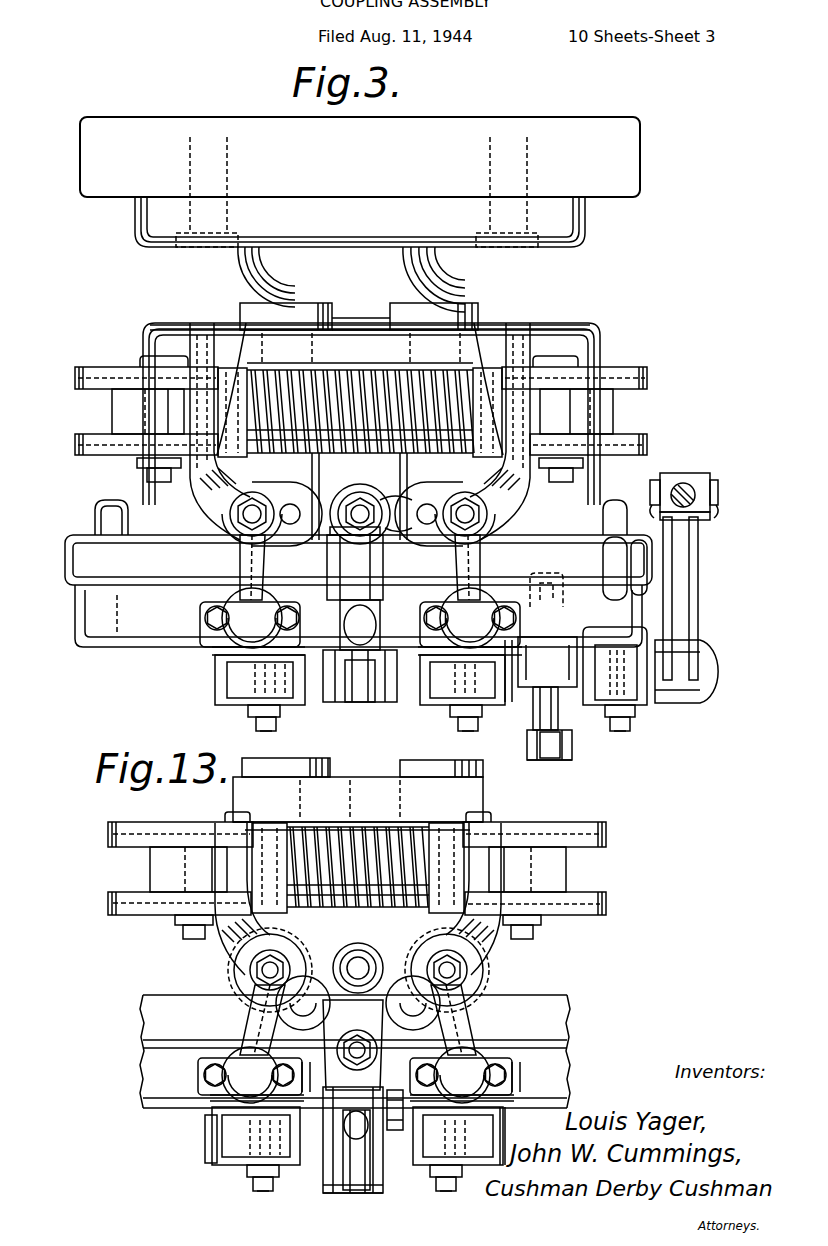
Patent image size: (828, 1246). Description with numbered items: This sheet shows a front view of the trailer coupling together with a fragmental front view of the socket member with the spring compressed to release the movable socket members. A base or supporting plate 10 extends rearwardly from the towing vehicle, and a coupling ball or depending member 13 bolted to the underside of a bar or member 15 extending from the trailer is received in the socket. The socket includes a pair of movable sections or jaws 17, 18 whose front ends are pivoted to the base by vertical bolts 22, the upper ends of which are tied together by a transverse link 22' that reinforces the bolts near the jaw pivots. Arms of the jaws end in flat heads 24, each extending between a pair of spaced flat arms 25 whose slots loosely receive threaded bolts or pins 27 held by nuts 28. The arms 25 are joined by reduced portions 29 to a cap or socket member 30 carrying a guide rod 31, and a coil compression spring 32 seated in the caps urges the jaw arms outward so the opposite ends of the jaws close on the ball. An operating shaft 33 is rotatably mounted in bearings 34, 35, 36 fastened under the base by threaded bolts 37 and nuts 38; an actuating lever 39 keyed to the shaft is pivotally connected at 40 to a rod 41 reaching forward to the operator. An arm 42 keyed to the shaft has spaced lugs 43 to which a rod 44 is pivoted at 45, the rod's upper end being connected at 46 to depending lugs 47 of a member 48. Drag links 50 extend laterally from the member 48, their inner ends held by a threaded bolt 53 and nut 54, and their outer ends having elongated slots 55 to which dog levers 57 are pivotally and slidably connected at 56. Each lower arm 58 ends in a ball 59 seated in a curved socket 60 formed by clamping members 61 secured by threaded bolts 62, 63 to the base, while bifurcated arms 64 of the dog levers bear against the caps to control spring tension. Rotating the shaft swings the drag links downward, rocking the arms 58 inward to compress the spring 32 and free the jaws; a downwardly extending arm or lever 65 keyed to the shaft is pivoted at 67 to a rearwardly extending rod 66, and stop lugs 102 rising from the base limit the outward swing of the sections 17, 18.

In FIG. 3, the base or supporting plate 10 is at (80, 572).
In FIG. 13, the base or supporting plate 10 is at (550, 1008).
In FIG. 3, the coupling ball or depending member 13 is at (415, 292).
In FIG. 3, the bar or member 15 is at (610, 186).
In FIG. 3, the movable section or jaw 17 is at (160, 322).
In FIG. 3, the movable section or jaw 18 is at (556, 322).
In FIG. 3, the vertical bolts 22 is at (359, 302).
In FIG. 13, the vertical bolts 22 is at (358, 786).
In FIG. 3, the transverse link 22' is at (361, 298).
In FIG. 13, the transverse link 22' is at (286, 762).
In FIG. 3, the heads 24 is at (112, 426).
In FIG. 13, the heads 24 is at (160, 877).
In FIG. 3, the spaced flat arms 25 is at (82, 370).
In FIG. 13, the spaced flat arms 25 is at (115, 824).
In FIG. 3, the threaded bolts or pins 27 is at (150, 360).
In FIG. 13, the threaded bolts or pins 27 is at (226, 815).
In FIG. 3, the nuts 28 is at (140, 465).
In FIG. 13, the nuts 28 is at (178, 925).
In FIG. 3, the reduced portions 29 is at (205, 345).
In FIG. 13, the reduced portions 29 is at (235, 860).
In FIG. 3, the cap or socket member 30 is at (238, 365).
In FIG. 13, the cap or socket member 30 is at (262, 820).
In FIG. 3, the guide rod 31 is at (262, 392).
In FIG. 13, the guide rod 31 is at (340, 830).
In FIG. 3, the coil compression spring 32 is at (372, 368).
In FIG. 13, the coil compression spring 32 is at (368, 828).
In FIG. 3, the operating shaft 33 is at (722, 668).
In FIG. 13, the operating shaft 33 is at (215, 1130).
In FIG. 3, the bearing 34 is at (645, 704).
In FIG. 3, the bearing 35 is at (487, 700).
In FIG. 13, the bearing 35 is at (512, 1112).
In FIG. 3, the bearing 36 is at (230, 692).
In FIG. 13, the bearing 36 is at (232, 1162).
In FIG. 3, the threaded bolts 37 is at (262, 726).
In FIG. 13, the threaded bolts 37 is at (262, 1190).
In FIG. 3, the nuts 38 is at (252, 708).
In FIG. 13, the nuts 38 is at (252, 1175).
In FIG. 3, the actuating lever 39 is at (690, 578).
In FIG. 3, the pivotal connection 40 is at (712, 490).
In FIG. 3, the rod 41 is at (688, 490).
In FIG. 3, the arm 42 is at (345, 702).
In FIG. 3, the spaced lugs 43 is at (332, 702).
In FIG. 13, the spaced lugs 43 is at (335, 1193).
In FIG. 3, the rod 44 is at (370, 702).
In FIG. 13, the rod 44 is at (358, 1193).
In FIG. 3, the pivotal connection 45 is at (318, 692).
In FIG. 13, the pivotal connection 45 is at (325, 1185).
In FIG. 3, the pivotal connection 46 is at (327, 570).
In FIG. 13, the pivotal connection 46 is at (322, 1120).
In FIG. 3, the spaced depending lugs 47 is at (335, 540).
In FIG. 13, the spaced depending lugs 47 is at (375, 1064).
In FIG. 3, the member 48 is at (392, 500).
In FIG. 13, the member 48 is at (395, 1090).
In FIG. 3, the drag links 50 is at (256, 494).
In FIG. 13, the drag links 50 is at (350, 958).
In FIG. 3, the threaded bolt 53 is at (352, 495).
In FIG. 13, the threaded bolt 53 is at (352, 1040).
In FIG. 3, the nut 54 is at (362, 503).
In FIG. 13, the nut 54 is at (362, 1040).
In FIG. 3, the elongated slot 55 is at (289, 504).
In FIG. 13, the elongated slot 55 is at (305, 1018).
In FIG. 3, the pivotal and slidable connection 56 is at (242, 528).
In FIG. 13, the pivotal and slidable connection 56 is at (270, 960).
In FIG. 3, the dog lever 57 is at (205, 485).
In FIG. 13, the dog lever 57 is at (225, 940).
In FIG. 3, the lower arm 58 is at (245, 572).
In FIG. 13, the lower arm 58 is at (256, 1030).
In FIG. 3, the ball 59 is at (240, 606).
In FIG. 13, the ball 59 is at (250, 1055).
In FIG. 3, the curved socket 60 is at (225, 656).
In FIG. 13, the curved socket 60 is at (215, 1102).
In FIG. 3, the clamping members 61 is at (213, 636).
In FIG. 13, the clamping members 61 is at (198, 1087).
In FIG. 3, the threaded bolts 62 is at (215, 620).
In FIG. 13, the threaded bolts 62 is at (210, 1073).
In FIG. 3, the threaded bolts 63 is at (518, 645).
In FIG. 13, the threaded bolts 63 is at (288, 1078).
In FIG. 3, the bifurcated arms 64 is at (210, 400).
In FIG. 13, the bifurcated arms 64 is at (238, 866).
In FIG. 3, the arm or lever 65 is at (535, 710).
In FIG. 3, the rod 66 is at (572, 740).
In FIG. 3, the pivotal connection 67 is at (575, 760).
In FIG. 3, the stop lugs 102 is at (100, 514).